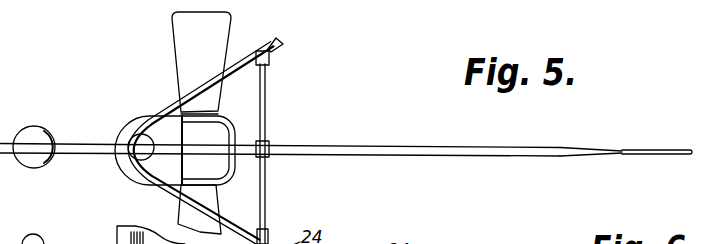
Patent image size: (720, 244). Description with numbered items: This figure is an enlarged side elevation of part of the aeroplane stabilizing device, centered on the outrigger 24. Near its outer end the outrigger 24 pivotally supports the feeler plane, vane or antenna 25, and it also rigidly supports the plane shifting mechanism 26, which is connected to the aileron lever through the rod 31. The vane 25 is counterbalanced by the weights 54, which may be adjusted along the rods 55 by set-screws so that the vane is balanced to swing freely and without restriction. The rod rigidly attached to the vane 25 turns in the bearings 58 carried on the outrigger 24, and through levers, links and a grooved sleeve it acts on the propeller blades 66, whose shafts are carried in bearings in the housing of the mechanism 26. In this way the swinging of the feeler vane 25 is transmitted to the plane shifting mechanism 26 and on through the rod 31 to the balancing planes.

The outrigger 24 is at (277, 42).
The feeler plane or antenna 25 is at (375, 151).
The plane shifting mechanism 26 is at (128, 122).
The rod 31 is at (648, 153).
The weights 54 is at (34, 131).
The rods 55 is at (72, 149).
The bearings 58 is at (137, 157).
The propeller blades 66 is at (229, 28).